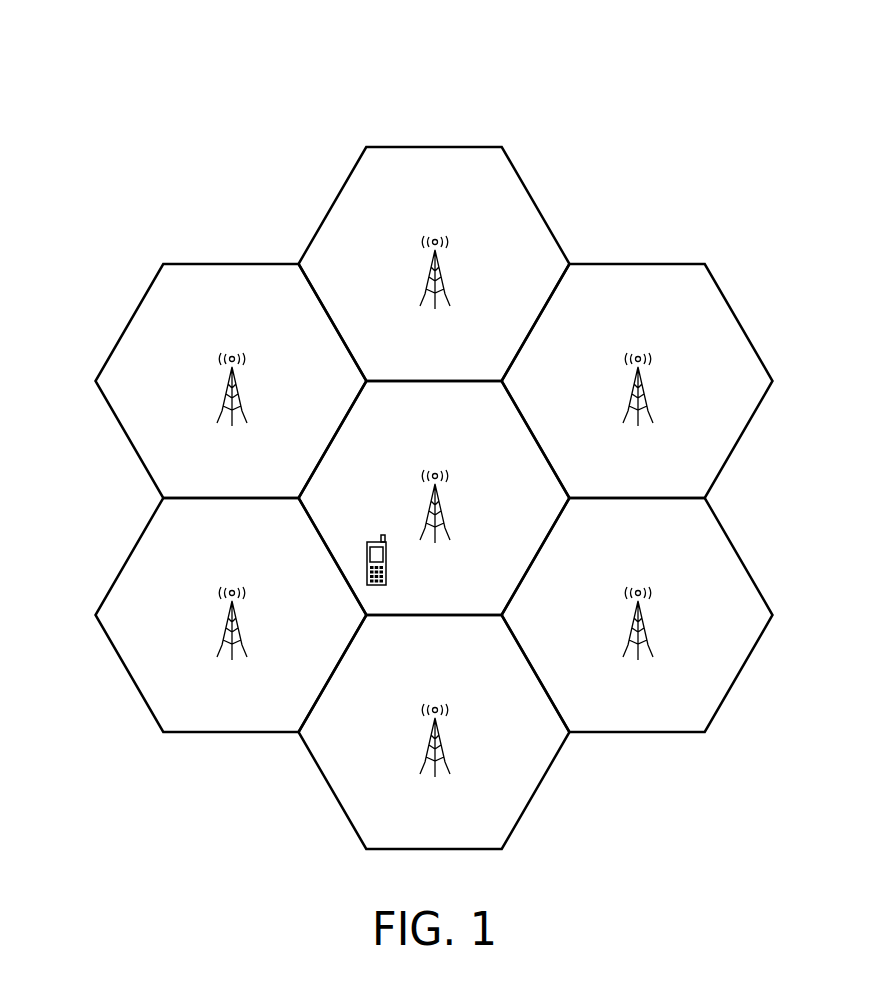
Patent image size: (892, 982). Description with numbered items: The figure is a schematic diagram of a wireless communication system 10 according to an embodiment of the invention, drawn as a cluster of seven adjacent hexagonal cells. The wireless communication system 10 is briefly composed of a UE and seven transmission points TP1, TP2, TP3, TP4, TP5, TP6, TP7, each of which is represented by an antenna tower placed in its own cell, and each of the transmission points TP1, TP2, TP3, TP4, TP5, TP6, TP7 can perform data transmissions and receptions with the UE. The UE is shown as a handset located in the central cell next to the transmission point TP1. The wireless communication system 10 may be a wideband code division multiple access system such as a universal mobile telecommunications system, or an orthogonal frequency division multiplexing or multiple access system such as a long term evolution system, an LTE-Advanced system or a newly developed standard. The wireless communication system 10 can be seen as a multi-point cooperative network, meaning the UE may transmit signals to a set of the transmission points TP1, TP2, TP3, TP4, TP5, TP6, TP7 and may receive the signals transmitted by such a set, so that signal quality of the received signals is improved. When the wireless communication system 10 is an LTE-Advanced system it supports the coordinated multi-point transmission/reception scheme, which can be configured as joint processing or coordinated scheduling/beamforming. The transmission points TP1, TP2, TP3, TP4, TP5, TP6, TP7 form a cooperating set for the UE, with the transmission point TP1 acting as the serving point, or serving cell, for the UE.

The wireless communication system 10 is at (691, 64).
The transmission point TP1 is at (447, 518).
The transmission point TP2 is at (445, 745).
The transmission point TP3 is at (228, 633).
The transmission point TP4 is at (223, 388).
The transmission point TP5 is at (443, 273).
The transmission point TP6 is at (647, 390).
The transmission point TP7 is at (653, 623).
The element UE is at (396, 563).